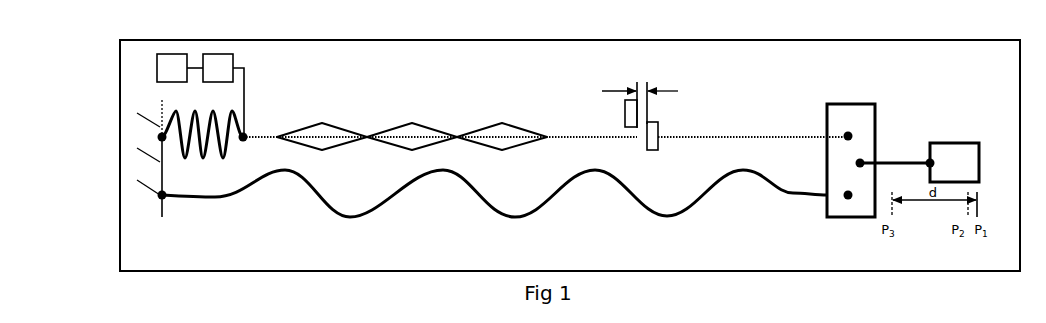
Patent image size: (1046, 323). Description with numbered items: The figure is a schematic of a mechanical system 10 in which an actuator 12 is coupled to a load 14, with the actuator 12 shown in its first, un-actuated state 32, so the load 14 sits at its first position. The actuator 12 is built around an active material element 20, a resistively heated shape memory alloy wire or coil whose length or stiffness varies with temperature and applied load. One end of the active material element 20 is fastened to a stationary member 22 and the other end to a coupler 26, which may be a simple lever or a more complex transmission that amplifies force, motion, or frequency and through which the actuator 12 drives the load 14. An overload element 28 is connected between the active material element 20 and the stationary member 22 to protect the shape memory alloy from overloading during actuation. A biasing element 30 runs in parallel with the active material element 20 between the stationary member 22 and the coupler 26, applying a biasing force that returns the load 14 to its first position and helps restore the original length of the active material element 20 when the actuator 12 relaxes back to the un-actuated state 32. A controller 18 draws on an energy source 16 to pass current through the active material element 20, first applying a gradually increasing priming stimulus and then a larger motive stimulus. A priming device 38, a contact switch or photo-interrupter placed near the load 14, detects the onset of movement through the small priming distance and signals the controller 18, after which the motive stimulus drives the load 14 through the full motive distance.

The mechanical system 10 is at (120, 95).
The actuator 12 is at (294, 111).
The load 14 is at (919, 162).
The energy source 16 is at (172, 68).
The controller 18 is at (215, 95).
The active material element 20 is at (392, 125).
The stationary member 22 is at (162, 212).
The coupler 26 is at (843, 104).
The overload element 28 is at (193, 150).
The biasing element 30 is at (400, 196).
The un-actuated state 32 is at (113, 163).
The priming device 38 is at (582, 113).